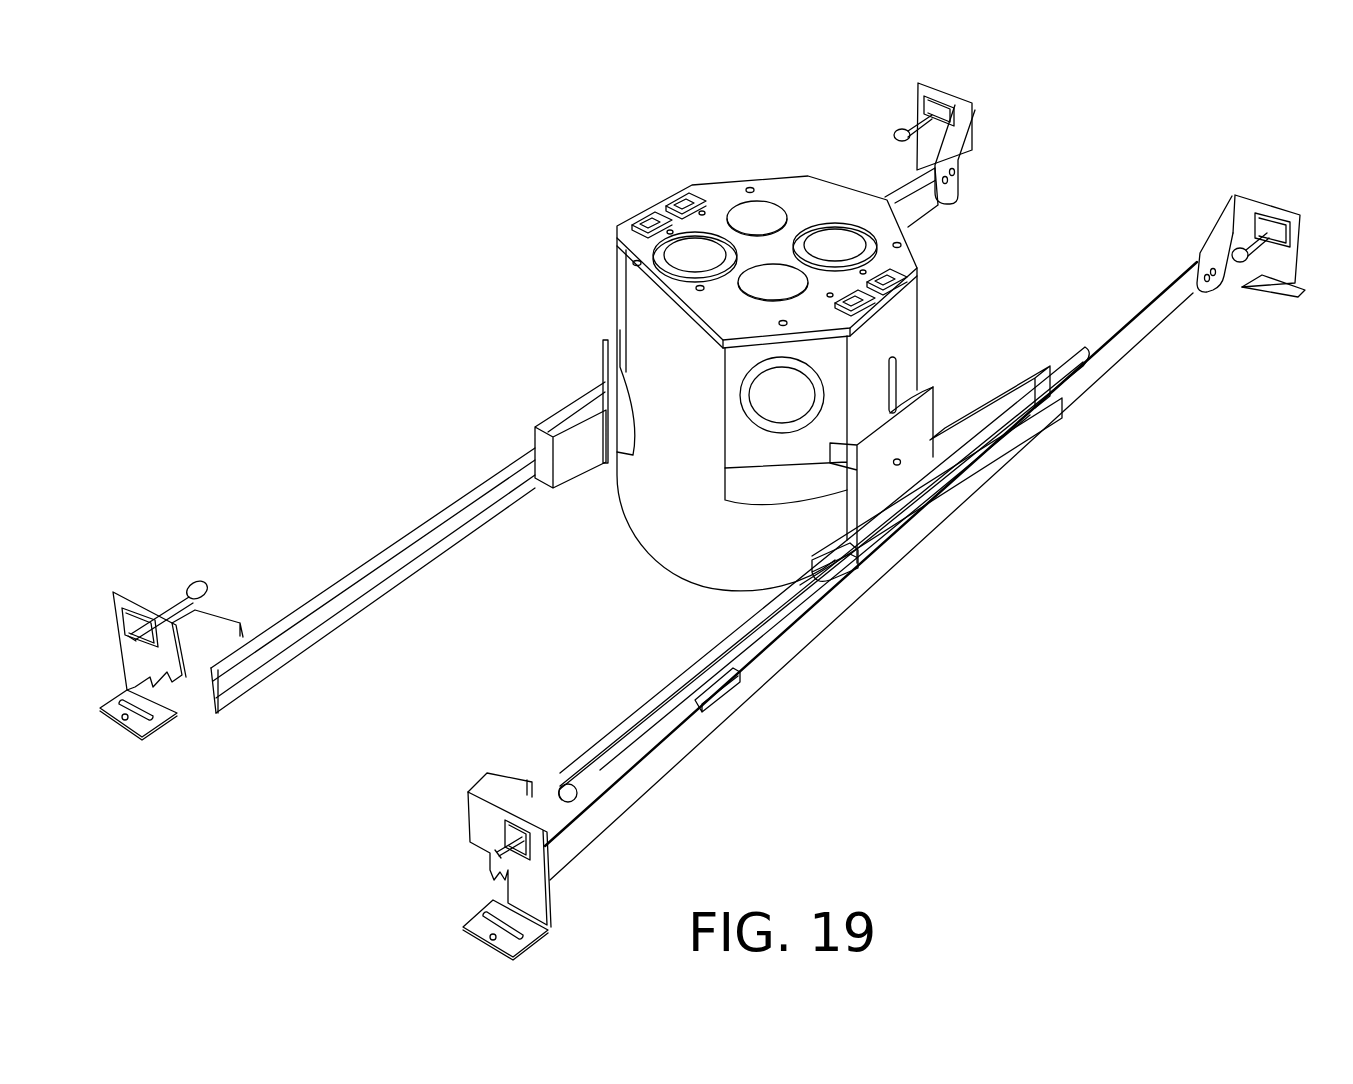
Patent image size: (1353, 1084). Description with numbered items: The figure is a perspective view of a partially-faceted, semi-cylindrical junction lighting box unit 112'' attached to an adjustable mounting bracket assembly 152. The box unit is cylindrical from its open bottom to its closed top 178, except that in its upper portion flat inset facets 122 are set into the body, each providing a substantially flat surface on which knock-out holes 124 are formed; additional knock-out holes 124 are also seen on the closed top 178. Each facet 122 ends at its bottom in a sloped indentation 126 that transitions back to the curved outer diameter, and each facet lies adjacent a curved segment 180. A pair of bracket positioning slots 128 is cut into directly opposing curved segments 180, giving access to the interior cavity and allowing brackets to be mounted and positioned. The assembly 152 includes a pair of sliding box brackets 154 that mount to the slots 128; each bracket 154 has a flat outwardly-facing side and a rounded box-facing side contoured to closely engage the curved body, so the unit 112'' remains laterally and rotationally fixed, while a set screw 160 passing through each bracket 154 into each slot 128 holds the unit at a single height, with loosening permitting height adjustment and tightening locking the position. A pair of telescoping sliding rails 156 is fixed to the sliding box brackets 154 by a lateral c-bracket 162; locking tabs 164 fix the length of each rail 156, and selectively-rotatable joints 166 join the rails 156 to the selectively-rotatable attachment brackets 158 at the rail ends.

The semi-cylindrical junction lighting box unit 112'' is at (702, 500).
The flat inset facet 122 is at (828, 350).
The knock-out holes 124 is at (828, 243).
The sloped indentation 126 is at (775, 488).
The bracket positioning slot 128 is at (893, 378).
The mounting bracket assembly 152 is at (345, 525).
The sliding box bracket 154 is at (606, 342).
The telescoping sliding rail 156 is at (600, 617).
The selectively-rotatable attachment bracket 158 is at (1232, 198).
The set screw 160 is at (897, 463).
The lateral c-bracket 162 is at (990, 440).
The locking tab 164 is at (738, 685).
The selectively-rotatable joint 166 is at (1210, 283).
The closed top 178 is at (833, 200).
The curved segment 180 is at (658, 348).